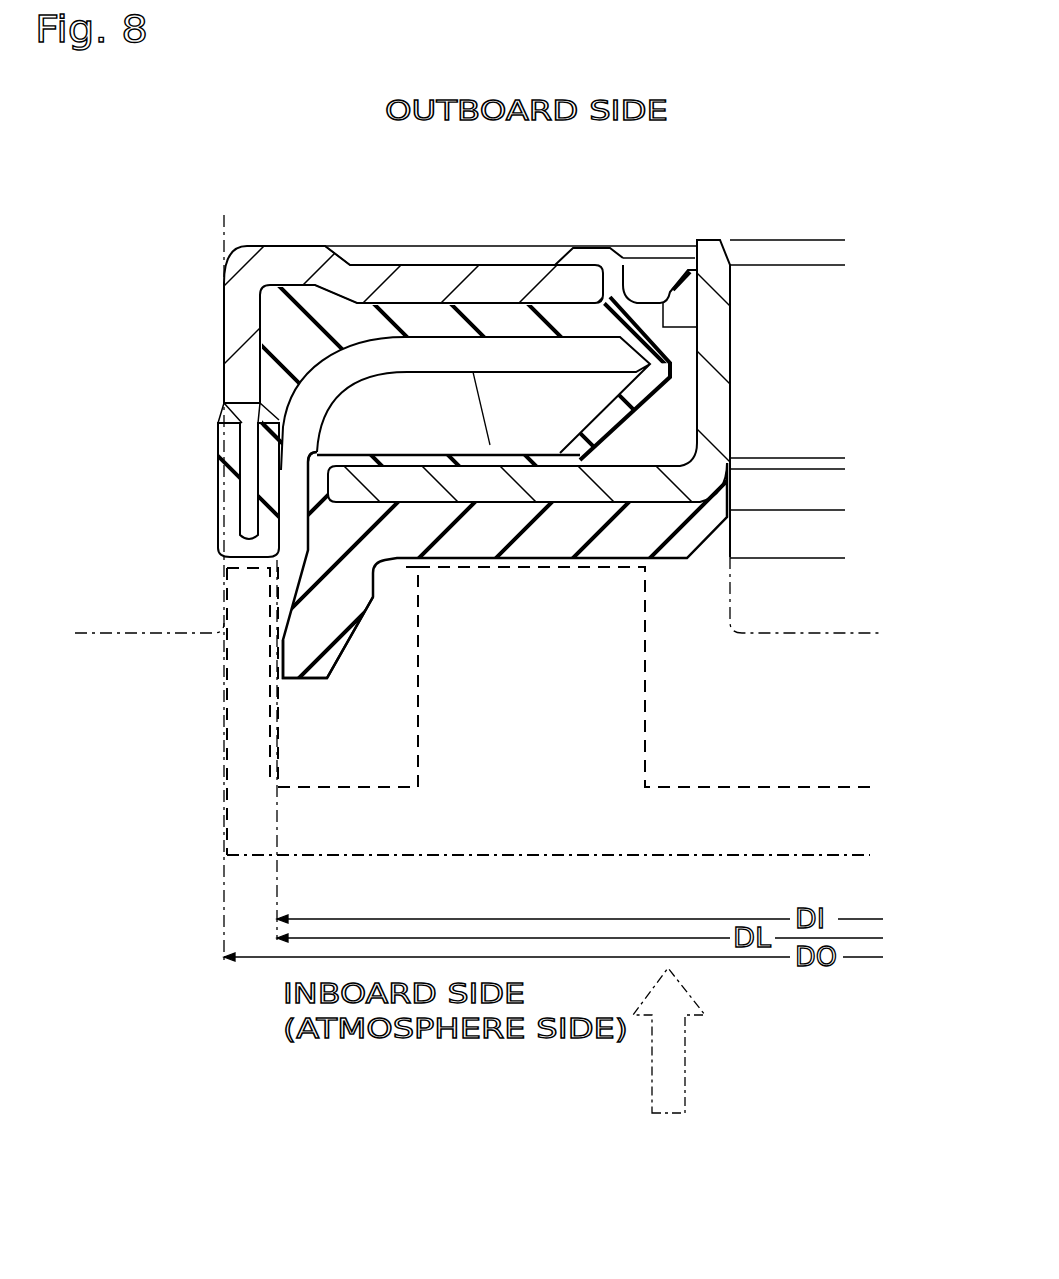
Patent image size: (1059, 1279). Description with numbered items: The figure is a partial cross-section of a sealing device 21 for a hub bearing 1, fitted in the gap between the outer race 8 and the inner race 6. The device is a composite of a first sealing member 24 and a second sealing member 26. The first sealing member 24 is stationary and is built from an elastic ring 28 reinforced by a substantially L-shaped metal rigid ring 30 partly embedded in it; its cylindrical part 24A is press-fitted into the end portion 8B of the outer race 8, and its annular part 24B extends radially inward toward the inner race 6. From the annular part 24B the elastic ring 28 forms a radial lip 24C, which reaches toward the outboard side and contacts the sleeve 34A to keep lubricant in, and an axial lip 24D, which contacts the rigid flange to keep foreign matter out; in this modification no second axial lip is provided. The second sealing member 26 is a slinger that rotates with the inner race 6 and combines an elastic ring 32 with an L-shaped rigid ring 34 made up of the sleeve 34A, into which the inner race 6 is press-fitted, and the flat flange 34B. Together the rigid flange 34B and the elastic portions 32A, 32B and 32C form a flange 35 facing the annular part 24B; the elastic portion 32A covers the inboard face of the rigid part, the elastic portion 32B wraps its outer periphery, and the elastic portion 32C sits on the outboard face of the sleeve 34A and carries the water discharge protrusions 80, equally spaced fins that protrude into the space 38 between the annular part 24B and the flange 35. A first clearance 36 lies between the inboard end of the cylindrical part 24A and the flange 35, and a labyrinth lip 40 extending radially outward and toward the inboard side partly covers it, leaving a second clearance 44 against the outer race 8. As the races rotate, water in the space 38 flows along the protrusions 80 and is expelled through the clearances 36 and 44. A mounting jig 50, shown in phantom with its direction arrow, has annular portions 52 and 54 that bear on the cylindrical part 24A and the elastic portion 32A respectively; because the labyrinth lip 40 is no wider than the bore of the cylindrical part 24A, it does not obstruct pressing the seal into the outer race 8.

The hub bearing 1 is at (207, 718).
The inner race 6 is at (746, 636).
The outer race 8 is at (120, 635).
The end portion of the outer race 8B is at (88, 635).
The sealing device 21 is at (355, 700).
The first sealing member 24 is at (285, 215).
The cylindrical part 24A is at (237, 330).
The annular part 24B is at (372, 265).
The radial lip 24C is at (657, 300).
The axial lip 24D is at (645, 407).
The second sealing member 26 is at (660, 608).
The elastic ring 28 is at (582, 262).
The rigid ring 30 is at (298, 270).
The elastic ring 32 is at (507, 560).
The elastic portion 32A is at (550, 545).
The elastic portion 32B is at (318, 478).
The elastic portion 32C is at (383, 447).
The rigid ring 34 is at (722, 350).
The sleeve 34A is at (723, 328).
The flange 34B is at (585, 487).
The flange 35 is at (478, 545).
The first clearance 36 is at (280, 478).
The space 38 is at (320, 362).
The labyrinth lip 40 is at (340, 655).
The second clearance 44 is at (244, 625).
The mounting jig 50 is at (318, 858).
The circular annular portion 52 is at (222, 750).
The circular annular portion 54 is at (648, 706).
The water discharge protrusions 80 is at (470, 372).